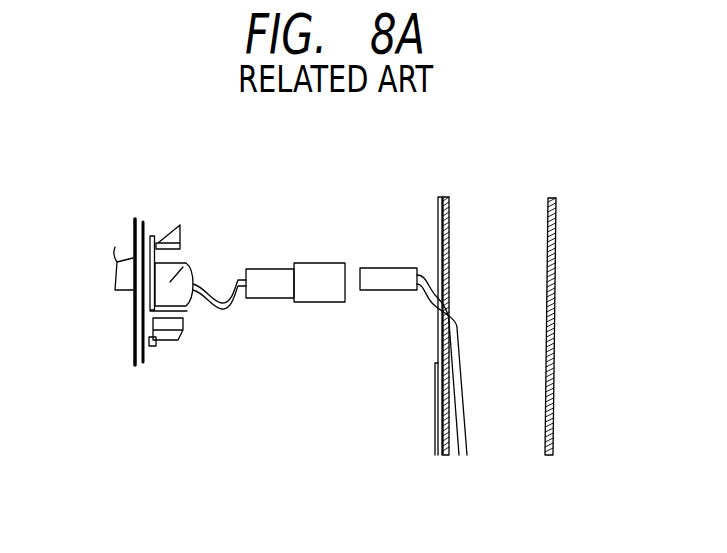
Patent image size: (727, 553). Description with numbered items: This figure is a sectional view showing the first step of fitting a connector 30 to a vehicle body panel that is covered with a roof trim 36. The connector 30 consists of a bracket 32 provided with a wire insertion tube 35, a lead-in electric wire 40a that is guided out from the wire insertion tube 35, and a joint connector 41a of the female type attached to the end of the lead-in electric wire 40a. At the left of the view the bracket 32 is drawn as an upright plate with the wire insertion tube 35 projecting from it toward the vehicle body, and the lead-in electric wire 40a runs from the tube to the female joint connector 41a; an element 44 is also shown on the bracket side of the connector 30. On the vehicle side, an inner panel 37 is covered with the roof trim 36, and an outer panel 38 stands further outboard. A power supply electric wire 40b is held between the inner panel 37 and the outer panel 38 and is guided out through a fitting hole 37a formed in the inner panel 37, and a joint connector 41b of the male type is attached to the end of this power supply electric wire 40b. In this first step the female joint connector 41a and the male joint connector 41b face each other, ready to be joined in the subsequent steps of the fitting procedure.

The connector 30 is at (202, 188).
The bracket 32 is at (133, 338).
The wire insertion tube 35 is at (184, 262).
The roof trim 36 is at (435, 402).
The inner panel 37 is at (447, 427).
The fitting hole 37a is at (450, 270).
The outer panel 38 is at (558, 369).
The lead-in electric wire 40a is at (233, 301).
The power supply electric wire 40b is at (467, 406).
The joint connector (female type) 41a is at (313, 273).
The joint connector (male type) 41b is at (387, 272).
The seal ring 44 is at (166, 300).